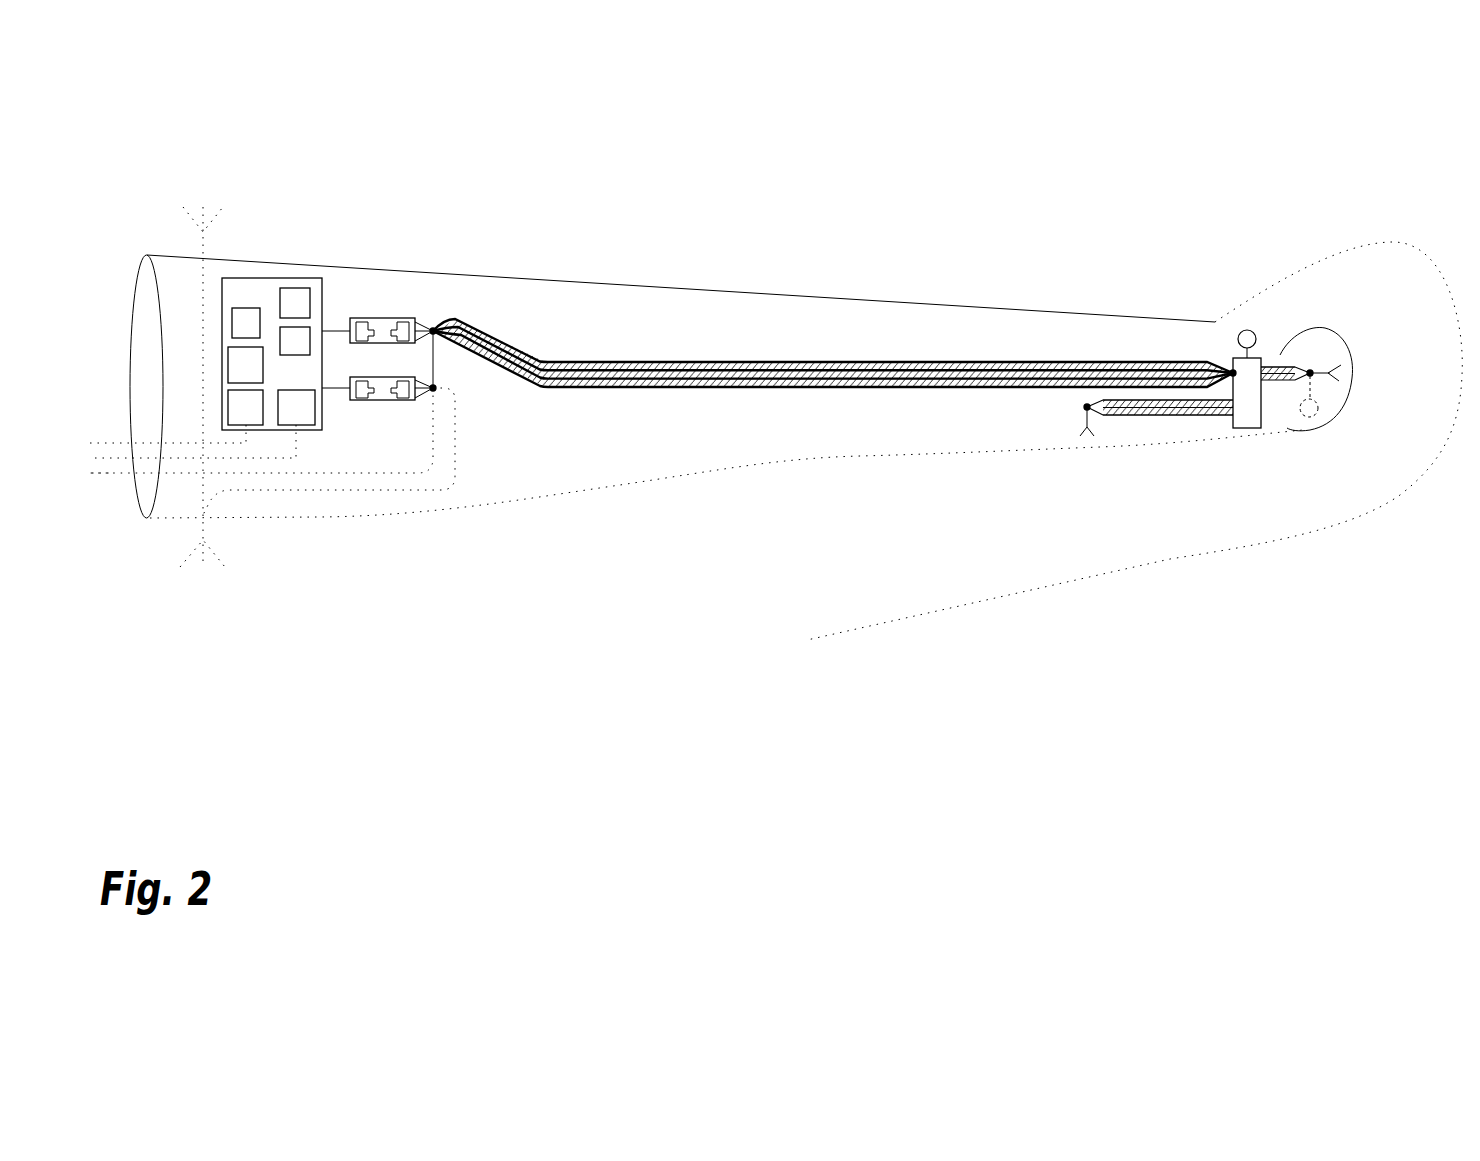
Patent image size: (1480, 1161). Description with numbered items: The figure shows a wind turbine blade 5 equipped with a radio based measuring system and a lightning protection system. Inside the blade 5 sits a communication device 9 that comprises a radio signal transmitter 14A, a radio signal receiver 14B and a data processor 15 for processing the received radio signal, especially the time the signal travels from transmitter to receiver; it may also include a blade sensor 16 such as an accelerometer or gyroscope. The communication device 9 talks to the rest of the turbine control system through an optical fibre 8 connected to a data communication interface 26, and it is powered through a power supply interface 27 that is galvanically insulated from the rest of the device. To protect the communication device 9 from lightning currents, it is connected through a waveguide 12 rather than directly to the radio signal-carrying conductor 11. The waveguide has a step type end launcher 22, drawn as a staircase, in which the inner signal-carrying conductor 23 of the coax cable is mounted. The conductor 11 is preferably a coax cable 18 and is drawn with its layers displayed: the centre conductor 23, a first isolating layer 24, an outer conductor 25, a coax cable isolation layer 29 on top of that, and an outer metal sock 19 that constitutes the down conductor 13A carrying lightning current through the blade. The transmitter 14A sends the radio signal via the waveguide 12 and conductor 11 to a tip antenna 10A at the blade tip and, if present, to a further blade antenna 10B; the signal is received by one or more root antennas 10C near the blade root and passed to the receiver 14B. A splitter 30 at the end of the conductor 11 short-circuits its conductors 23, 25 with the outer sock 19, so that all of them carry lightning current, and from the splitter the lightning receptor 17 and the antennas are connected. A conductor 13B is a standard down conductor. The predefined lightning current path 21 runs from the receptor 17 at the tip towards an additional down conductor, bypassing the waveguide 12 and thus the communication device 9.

The blade 5 is at (1233, 358).
The optical fibre 8 is at (149, 443).
The communication device 9 is at (272, 280).
The tip antenna 10A is at (1342, 370).
The blade antenna 10B is at (1078, 434).
The root antenna 10C is at (213, 217).
The conductor 11 is at (795, 409).
The waveguide 12 is at (420, 327).
The down conductor 13A is at (834, 409).
The conductor 13B is at (105, 473).
The radio signal transmitter 14A is at (297, 288).
The radio signal receiver 14B is at (297, 327).
The data processor 15 is at (243, 308).
The blade sensor 16 is at (246, 365).
The lightning receptor 17 is at (1318, 405).
The coax cable 18 is at (453, 485).
The outer sock 19 is at (1175, 362).
The predefined lightning current path 21 is at (443, 430).
The end launcher 22 is at (370, 327).
The signal-carrying conductor 23 is at (1090, 362).
The first isolating layer 24 is at (1043, 362).
The outer conductor 25 is at (1133, 362).
The data communication interface 26 is at (246, 408).
The power supply interface 27 is at (296, 408).
The coax cable isolation layer 29 is at (1003, 362).
The splitter 30 is at (1263, 323).